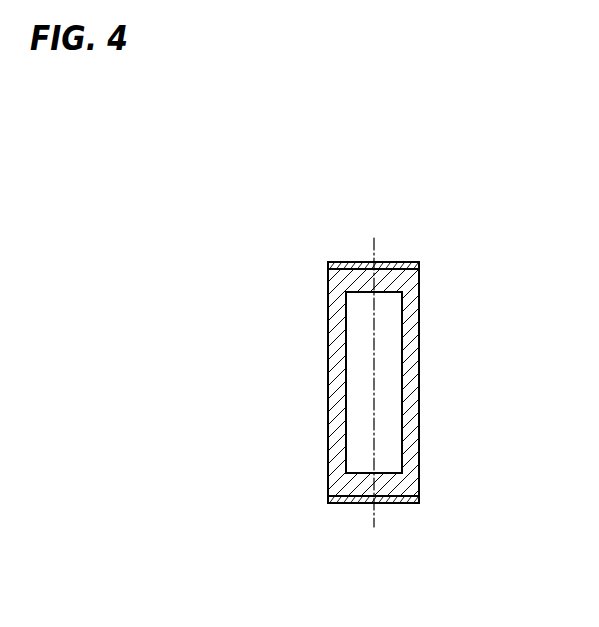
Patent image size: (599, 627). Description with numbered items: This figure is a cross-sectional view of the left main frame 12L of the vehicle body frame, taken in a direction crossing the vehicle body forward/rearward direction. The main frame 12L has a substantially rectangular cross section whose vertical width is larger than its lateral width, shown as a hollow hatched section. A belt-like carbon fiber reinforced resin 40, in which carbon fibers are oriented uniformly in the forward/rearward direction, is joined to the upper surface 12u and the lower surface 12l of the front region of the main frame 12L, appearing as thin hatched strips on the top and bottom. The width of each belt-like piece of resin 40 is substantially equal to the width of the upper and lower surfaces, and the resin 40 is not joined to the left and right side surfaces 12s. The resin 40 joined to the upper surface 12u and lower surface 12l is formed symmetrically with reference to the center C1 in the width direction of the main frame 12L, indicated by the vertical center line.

The left main frame 12L is at (385, 338).
The side surfaces 12s is at (328, 392).
The upper surface 12u is at (395, 262).
The lower surface 12l is at (360, 504).
The carbon fiber reinforced resin 40 is at (352, 261).
The center C1 is at (373, 449).